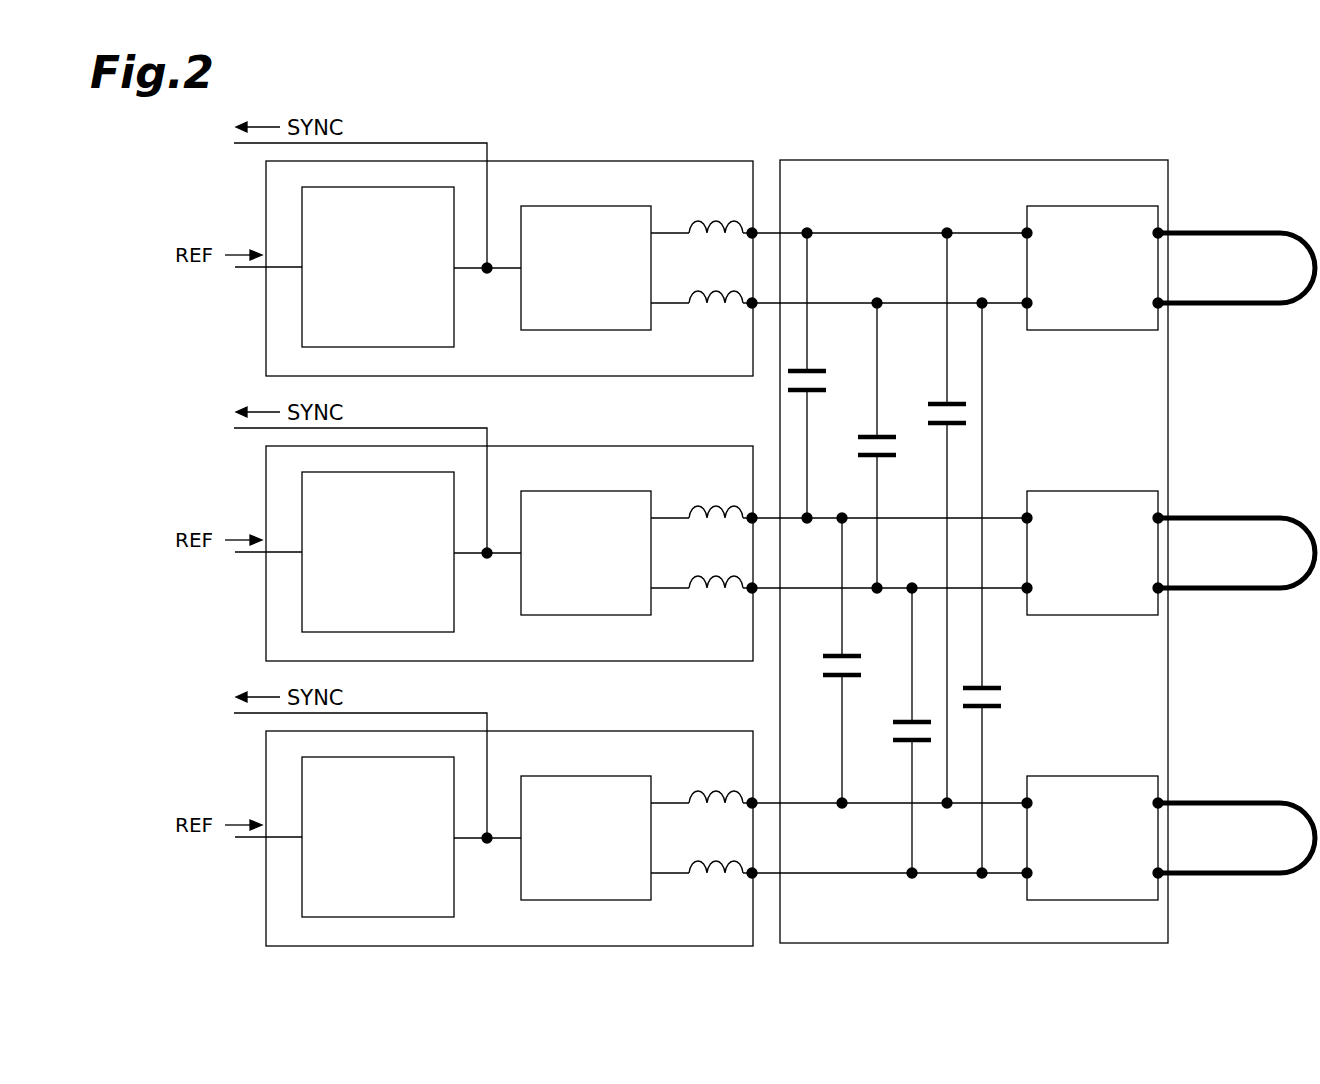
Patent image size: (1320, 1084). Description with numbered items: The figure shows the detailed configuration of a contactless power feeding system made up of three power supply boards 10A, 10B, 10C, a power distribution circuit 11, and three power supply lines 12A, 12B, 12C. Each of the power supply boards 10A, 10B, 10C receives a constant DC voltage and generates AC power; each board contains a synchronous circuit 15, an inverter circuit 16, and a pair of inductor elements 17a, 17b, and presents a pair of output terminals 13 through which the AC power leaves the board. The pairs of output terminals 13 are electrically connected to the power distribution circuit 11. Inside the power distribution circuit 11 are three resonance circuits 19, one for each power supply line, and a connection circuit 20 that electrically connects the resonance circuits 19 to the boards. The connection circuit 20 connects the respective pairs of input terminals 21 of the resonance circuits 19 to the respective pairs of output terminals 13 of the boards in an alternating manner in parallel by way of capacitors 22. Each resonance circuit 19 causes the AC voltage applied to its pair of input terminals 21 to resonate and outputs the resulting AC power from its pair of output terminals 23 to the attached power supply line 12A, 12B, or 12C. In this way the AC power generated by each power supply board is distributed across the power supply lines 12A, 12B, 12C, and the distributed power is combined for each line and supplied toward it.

The power supply board 10A is at (660, 161).
The power supply board 10B is at (660, 446).
The power supply board 10C is at (660, 731).
The power distribution circuit 11 is at (1110, 160).
The power supply line 12A is at (1268, 219).
The power supply line 12B is at (1268, 504).
The power supply line 12C is at (1268, 789).
The output terminal 13 is at (753, 230).
The synchronous circuit 15 is at (408, 188).
The inverter circuit 16 is at (602, 207).
The inductor element 17a is at (716, 222).
The inductor element 17b is at (716, 314).
The resonance circuit 19 is at (1108, 206).
The connection circuit 20 is at (886, 224).
The input terminal 21 is at (1022, 230).
The capacitor 22 is at (812, 369).
The output terminal 23 is at (1165, 230).